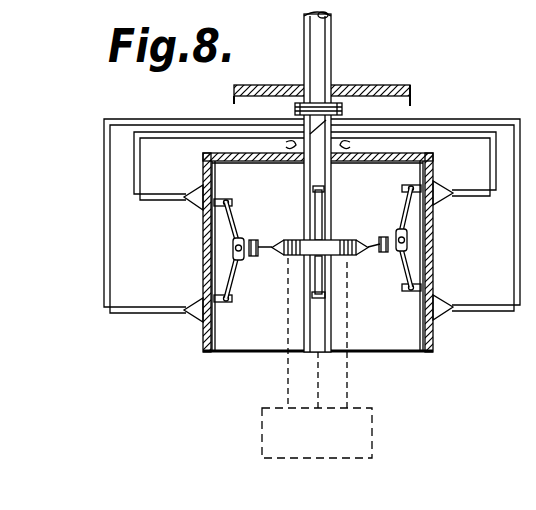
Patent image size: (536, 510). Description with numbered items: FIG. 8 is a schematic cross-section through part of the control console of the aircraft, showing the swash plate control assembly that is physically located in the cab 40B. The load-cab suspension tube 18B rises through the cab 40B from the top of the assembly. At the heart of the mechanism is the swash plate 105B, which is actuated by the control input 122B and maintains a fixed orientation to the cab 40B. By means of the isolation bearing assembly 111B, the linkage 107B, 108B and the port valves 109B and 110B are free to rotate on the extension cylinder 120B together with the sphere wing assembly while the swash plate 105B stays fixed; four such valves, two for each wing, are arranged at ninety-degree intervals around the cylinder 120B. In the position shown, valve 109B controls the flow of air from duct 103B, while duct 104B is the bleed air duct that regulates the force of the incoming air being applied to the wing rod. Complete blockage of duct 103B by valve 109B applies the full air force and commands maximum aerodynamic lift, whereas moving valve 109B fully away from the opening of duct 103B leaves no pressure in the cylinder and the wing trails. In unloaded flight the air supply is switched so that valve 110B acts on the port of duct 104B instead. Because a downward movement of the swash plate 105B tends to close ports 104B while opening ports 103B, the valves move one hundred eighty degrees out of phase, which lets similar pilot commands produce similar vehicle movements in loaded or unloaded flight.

The load-cab suspension tube 18B is at (331, 54).
The cab 40B is at (404, 95).
The duct 103B is at (164, 200).
The bleed air duct 104B is at (168, 305).
The swash plate 105B is at (336, 254).
The linkage 107B is at (236, 275).
The linkage 108B is at (224, 236).
The port valve 109B is at (212, 192).
The port valve 110B is at (191, 319).
The isolation bearing assembly 111B is at (270, 241).
The extension cylinder 120B is at (433, 241).
The control input 122B is at (372, 424).